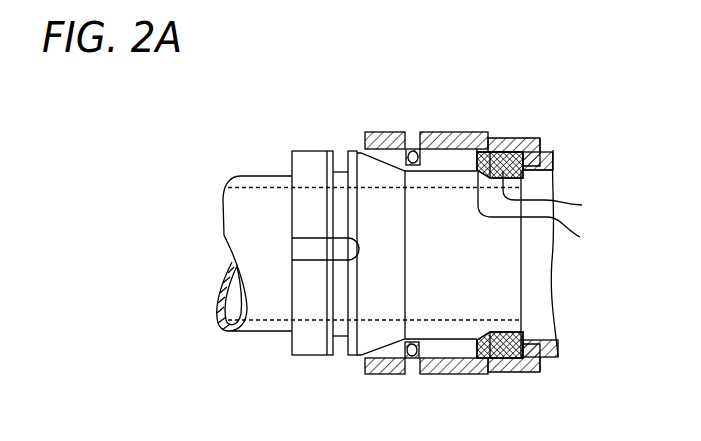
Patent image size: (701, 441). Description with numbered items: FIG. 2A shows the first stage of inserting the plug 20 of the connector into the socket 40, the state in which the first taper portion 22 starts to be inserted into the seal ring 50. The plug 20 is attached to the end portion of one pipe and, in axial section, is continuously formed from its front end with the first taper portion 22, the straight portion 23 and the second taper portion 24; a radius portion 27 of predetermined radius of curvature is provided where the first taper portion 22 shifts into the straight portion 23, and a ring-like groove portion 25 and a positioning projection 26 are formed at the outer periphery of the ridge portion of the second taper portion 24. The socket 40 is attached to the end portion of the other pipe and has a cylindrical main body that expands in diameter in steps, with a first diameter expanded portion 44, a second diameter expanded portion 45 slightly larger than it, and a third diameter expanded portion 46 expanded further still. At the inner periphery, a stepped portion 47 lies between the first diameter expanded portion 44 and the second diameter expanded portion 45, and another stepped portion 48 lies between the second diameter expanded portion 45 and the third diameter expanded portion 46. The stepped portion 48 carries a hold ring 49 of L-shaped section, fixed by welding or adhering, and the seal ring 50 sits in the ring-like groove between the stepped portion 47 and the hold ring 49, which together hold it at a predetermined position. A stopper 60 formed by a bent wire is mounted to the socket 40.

The plug 20 is at (250, 168).
The first taper portion 22 is at (556, 192).
The straight portion 23 is at (441, 173).
The second taper portion 24 is at (382, 173).
The ring-like groove portion 25 is at (337, 150).
The positioning projection 26 is at (313, 249).
The radius portion 27 is at (542, 210).
The socket 40 is at (556, 370).
The first diameter expanded portion 44 is at (560, 152).
The second diameter expanded portion 45 is at (512, 138).
The third diameter expanded portion 46 is at (446, 135).
The stepped portion 47 is at (553, 176).
The stepped portion 48 is at (485, 150).
The hold ring 49 is at (487, 150).
The seal ring 50 is at (532, 140).
The stopper 60 is at (408, 148).